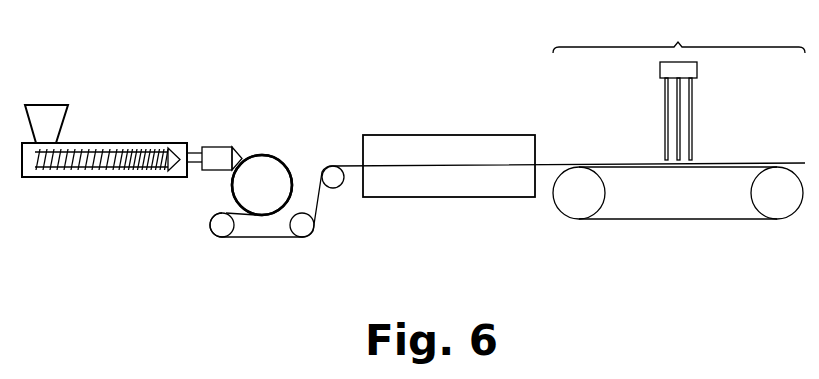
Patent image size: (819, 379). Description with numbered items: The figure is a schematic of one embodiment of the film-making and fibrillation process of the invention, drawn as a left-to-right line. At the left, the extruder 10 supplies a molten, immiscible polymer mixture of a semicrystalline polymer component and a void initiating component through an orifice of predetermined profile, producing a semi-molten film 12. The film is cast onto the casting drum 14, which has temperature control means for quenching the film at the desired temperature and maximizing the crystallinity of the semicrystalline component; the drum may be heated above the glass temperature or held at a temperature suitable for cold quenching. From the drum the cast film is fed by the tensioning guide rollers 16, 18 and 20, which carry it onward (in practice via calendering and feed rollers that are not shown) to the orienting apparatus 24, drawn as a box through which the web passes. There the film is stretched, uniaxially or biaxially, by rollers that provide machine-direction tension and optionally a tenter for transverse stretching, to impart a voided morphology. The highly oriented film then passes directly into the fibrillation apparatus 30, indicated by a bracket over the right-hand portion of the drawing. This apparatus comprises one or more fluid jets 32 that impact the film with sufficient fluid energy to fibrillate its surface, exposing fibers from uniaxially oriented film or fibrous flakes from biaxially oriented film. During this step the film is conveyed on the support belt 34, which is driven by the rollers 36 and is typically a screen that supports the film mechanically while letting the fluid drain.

The extruder 10 is at (141, 137).
The semi-molten film 12 is at (256, 146).
The casting drum 14 is at (245, 187).
The tensioning guide roller 16 is at (226, 228).
The tensioning guide roller 18 is at (300, 223).
The tensioning guide roller 20 is at (333, 175).
The orienting apparatus 24 is at (452, 145).
The fibrillation apparatus 30 is at (686, 140).
The fluid jet 32 is at (697, 71).
The support belt 34 is at (678, 167).
The rollers 36 is at (576, 205).